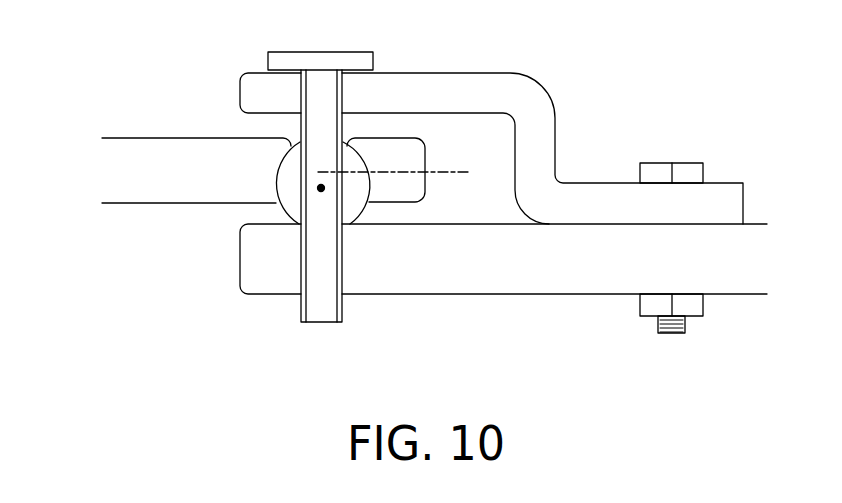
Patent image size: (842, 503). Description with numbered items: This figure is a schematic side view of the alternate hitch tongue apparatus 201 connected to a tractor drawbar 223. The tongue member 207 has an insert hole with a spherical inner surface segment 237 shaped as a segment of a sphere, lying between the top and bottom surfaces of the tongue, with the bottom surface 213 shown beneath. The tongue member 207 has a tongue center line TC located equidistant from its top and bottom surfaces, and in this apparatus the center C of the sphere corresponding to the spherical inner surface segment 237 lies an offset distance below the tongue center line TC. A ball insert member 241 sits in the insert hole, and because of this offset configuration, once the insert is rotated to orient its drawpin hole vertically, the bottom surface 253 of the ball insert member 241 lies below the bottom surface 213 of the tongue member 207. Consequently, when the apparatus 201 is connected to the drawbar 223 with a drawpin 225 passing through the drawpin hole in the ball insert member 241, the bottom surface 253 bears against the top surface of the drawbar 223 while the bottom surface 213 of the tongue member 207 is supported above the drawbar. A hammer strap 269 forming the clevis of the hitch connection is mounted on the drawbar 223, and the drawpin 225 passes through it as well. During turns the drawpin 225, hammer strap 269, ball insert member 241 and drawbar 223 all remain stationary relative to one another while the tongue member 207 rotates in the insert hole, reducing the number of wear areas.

The hitch tongue apparatus 201 is at (152, 222).
The tongue member 207 is at (150, 137).
The hammer strap 269 is at (412, 72).
The tractor drawbar 223 is at (475, 294).
The bottom surface of the tongue member 213 is at (402, 205).
The spherical inner surface segment 237 is at (272, 190).
The ball insert member 241 is at (357, 212).
The center of the sphere C is at (321, 188).
The tongue center line TC is at (460, 172).
The drawpin 225 is at (322, 322).
The bottom surface of the ball insert member 253 is at (293, 225).